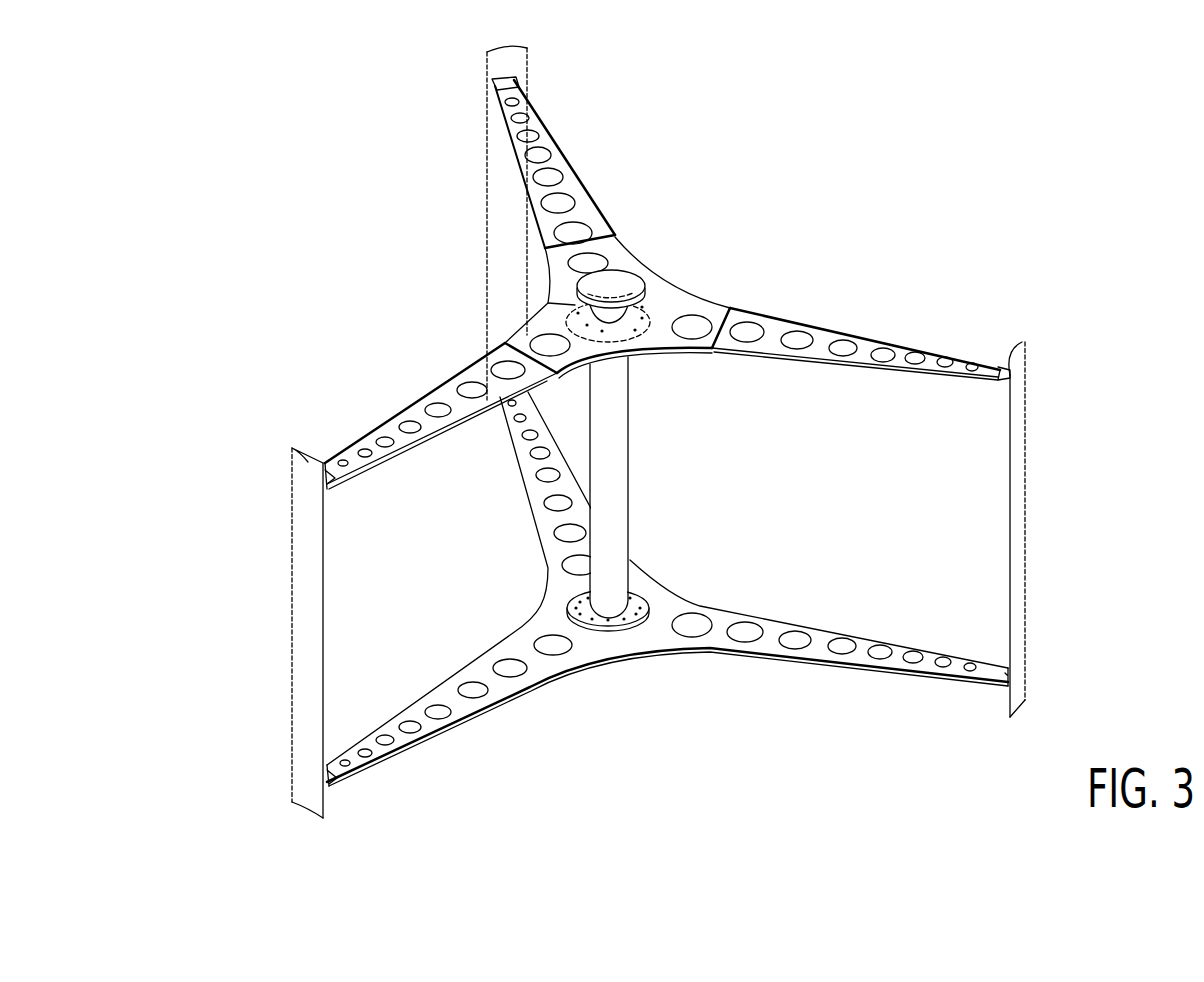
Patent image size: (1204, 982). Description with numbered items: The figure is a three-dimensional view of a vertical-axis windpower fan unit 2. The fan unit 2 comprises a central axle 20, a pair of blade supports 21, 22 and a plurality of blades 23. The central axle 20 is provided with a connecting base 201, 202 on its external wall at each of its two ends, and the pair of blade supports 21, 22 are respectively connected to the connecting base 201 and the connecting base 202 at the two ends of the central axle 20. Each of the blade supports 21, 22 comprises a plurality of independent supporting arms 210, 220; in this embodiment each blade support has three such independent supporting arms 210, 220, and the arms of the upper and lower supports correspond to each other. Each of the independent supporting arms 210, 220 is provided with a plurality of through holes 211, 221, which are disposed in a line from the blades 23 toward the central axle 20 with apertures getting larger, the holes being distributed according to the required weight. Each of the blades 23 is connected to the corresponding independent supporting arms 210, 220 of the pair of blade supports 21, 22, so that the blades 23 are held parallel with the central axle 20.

The fan unit 2 is at (644, 432).
The central axle 20 is at (622, 443).
The connecting base 201 is at (653, 308).
The connecting base 202 is at (641, 599).
The blade support 21 is at (667, 283).
The independent supporting arm 210 is at (667, 283).
The through hole 211 is at (752, 330).
The blade support 22 is at (667, 589).
The independent supporting arm 220 is at (667, 589).
The through hole 221 is at (752, 630).
The blade 23 is at (495, 176).